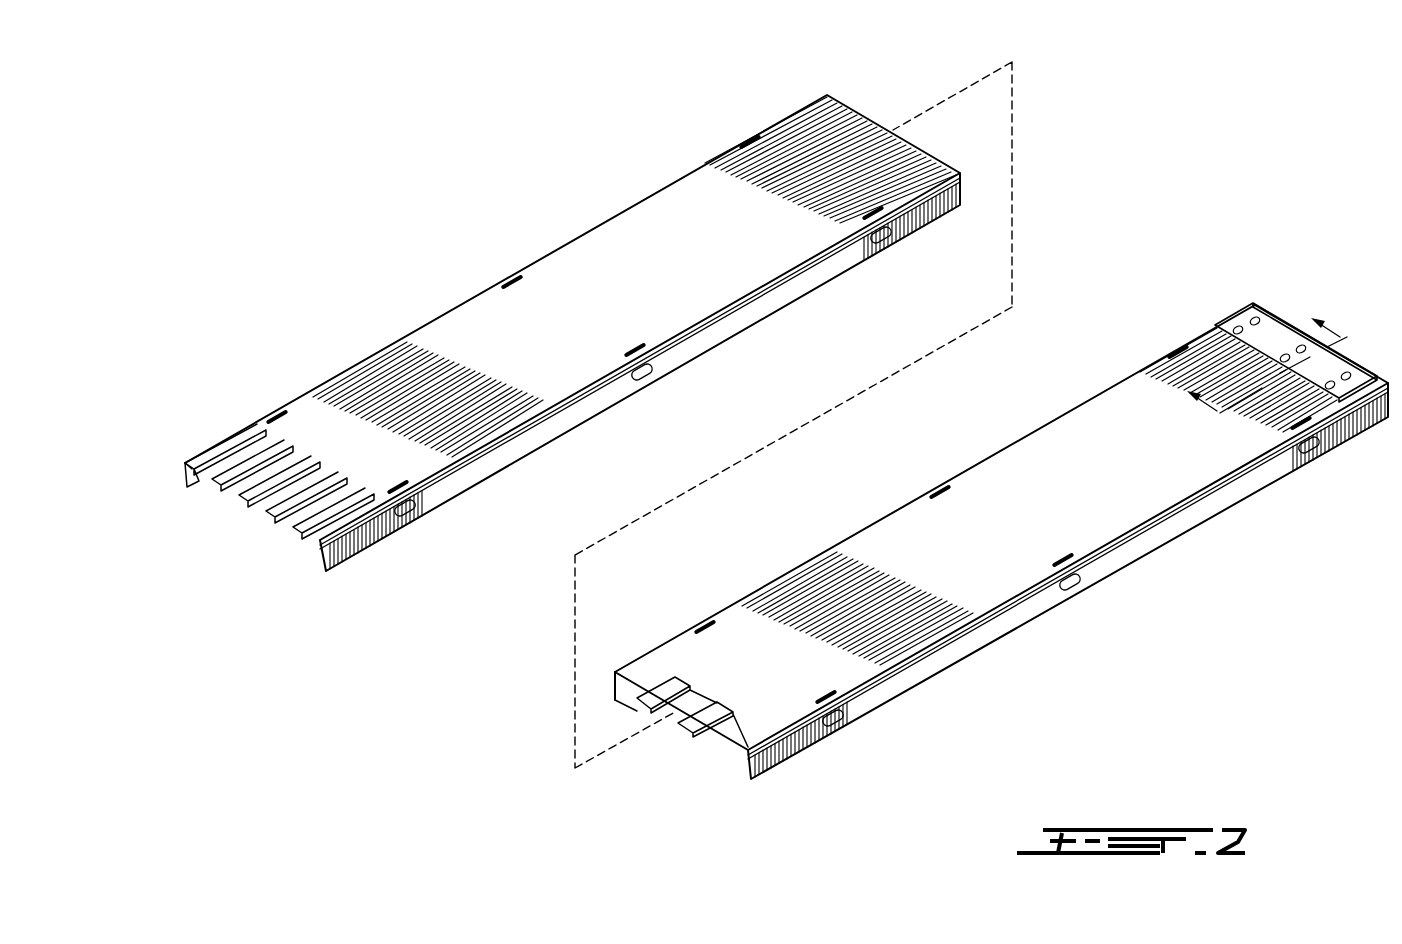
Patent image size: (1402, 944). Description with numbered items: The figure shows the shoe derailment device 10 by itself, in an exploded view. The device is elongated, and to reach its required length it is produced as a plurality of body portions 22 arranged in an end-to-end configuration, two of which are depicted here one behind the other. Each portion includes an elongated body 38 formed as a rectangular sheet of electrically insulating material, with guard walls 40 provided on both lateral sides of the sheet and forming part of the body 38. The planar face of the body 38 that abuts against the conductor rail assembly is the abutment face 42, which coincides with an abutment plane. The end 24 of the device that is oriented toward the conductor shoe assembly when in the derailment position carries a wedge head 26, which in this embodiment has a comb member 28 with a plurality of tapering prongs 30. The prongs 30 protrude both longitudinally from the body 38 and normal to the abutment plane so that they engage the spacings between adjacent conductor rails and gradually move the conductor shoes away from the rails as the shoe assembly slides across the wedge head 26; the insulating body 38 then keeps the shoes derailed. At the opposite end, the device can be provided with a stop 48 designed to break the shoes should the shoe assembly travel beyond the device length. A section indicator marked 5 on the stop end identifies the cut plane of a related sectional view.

The shoe derailment device 10 is at (429, 256).
The body portion 22 is at (908, 178).
The end 24 is at (367, 520).
The wedge head 26 is at (219, 441).
The comb member 28 is at (287, 540).
The tapering prongs 30 is at (293, 523).
The elongated body 38 is at (654, 282).
The guard walls 40 is at (760, 310).
The abutment face 42 is at (676, 207).
The stop 48 is at (1270, 337).
The section line 5- 5 is at (1277, 382).